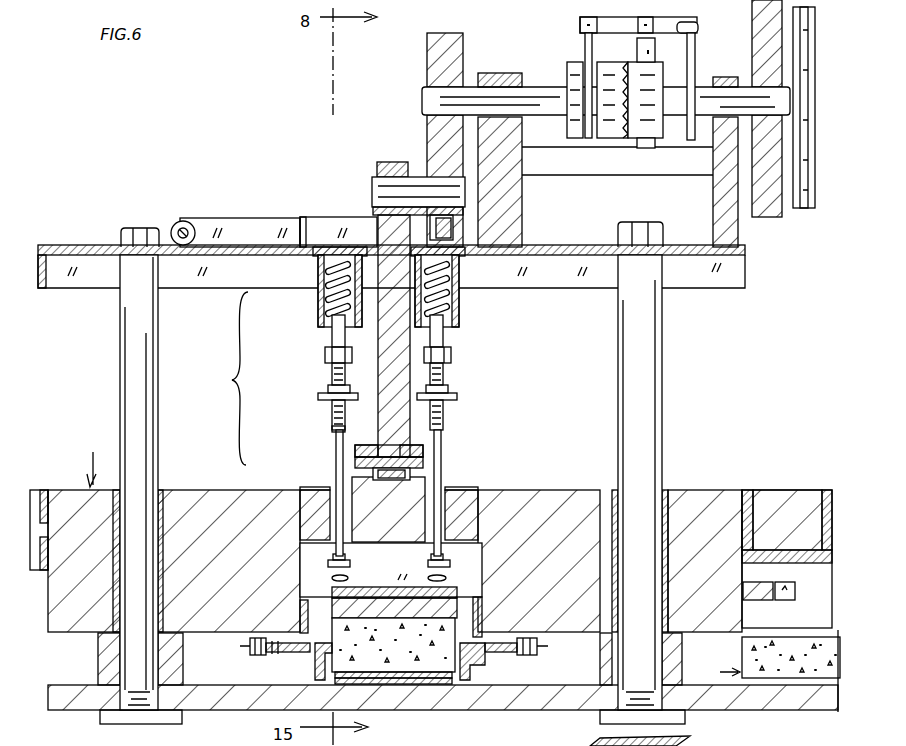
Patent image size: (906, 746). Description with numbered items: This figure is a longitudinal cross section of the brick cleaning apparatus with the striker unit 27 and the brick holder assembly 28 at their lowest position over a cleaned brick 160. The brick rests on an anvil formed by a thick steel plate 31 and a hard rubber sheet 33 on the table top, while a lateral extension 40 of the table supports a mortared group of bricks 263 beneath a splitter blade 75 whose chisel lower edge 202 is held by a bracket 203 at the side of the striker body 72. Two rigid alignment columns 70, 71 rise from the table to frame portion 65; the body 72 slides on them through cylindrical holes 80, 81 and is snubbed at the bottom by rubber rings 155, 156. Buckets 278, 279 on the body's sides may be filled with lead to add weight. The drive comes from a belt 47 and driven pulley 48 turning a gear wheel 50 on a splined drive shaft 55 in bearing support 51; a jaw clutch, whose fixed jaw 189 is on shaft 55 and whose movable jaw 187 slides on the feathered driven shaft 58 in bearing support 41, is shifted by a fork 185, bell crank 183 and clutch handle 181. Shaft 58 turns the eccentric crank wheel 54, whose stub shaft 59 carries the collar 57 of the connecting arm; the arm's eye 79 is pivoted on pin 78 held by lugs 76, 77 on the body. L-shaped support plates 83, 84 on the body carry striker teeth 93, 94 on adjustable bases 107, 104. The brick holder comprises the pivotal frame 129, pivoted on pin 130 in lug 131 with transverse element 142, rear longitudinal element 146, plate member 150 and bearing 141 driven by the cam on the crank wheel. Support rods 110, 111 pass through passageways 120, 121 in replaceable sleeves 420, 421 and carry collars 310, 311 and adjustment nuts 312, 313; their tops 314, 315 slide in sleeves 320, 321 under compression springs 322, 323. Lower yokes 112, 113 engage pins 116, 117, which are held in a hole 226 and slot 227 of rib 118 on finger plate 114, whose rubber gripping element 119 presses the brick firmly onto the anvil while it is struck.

The striker unit 27 is at (93, 459).
The brick holder assembly 28 is at (221, 378).
The steel plate 31 is at (430, 686).
The hard rubber sheet 33 is at (442, 690).
The extension of the table 40 is at (789, 716).
The bearing support 41 is at (522, 80).
The pulley belt 47 is at (808, 186).
The driven pulley 48 is at (815, 51).
The gear wheel 50 is at (775, 217).
The bearing support 51 is at (714, 81).
The crank wheel 54 is at (427, 67).
The splined drive shaft 55 is at (660, 105).
The collar 57 is at (378, 162).
The driven shaft 58 is at (422, 97).
The stub shaft 59 is at (372, 182).
The frame portion 65 is at (97, 252).
The striker alignment column 70 is at (120, 391).
The striker alignment column 71 is at (618, 423).
The striker body 72 is at (50, 605).
The splitter blade 75 is at (828, 580).
The lug 76 is at (355, 451).
The lug 77 is at (423, 451).
The pivot pin 78 is at (423, 466).
The eye 79 is at (332, 430).
The vertical cylindrical hole 80 is at (150, 490).
The vertical cylindrical hole 81 is at (603, 490).
The lateral striker teeth unit support plate 83 is at (254, 657).
The lateral striker teeth unit support plate 84 is at (530, 658).
The striker teeth 93 is at (314, 664).
The striker teeth 94 is at (475, 663).
The adjustable base 104 is at (505, 656).
The adjustable base 107 is at (275, 665).
The support rod 110 is at (340, 469).
The support rod 111 is at (443, 425).
The lower yoke 112 is at (348, 563).
The lower yoke 113 is at (432, 562).
The finger plate 114 is at (457, 592).
The pivot pin 116 is at (328, 566).
The pivot pin 117 is at (446, 566).
The supporting rib 118 is at (391, 570).
The gripping element 119 is at (484, 620).
The vertical cylindrical passageway 120 is at (306, 514).
The vertical cylindrical passageway 121 is at (458, 518).
The pivotal frame 129 is at (230, 219).
The pivot pin 130 is at (178, 224).
The lug 131 is at (170, 232).
The bearing 141 is at (455, 213).
The left hand transverse element 142 is at (300, 217).
The rear longitudinal element 146 is at (350, 222).
The plate member 150 is at (322, 250).
The snubber ring 155 is at (98, 660).
The snubber ring 156 is at (676, 650).
The brick 160 is at (392, 660).
The clutch handle 181 is at (695, 53).
The bell crank 183 is at (580, 25).
The fork 185 is at (585, 49).
The movable jaw 187 is at (620, 72).
The fixed jaw 189 is at (660, 72).
The lower edge 202 is at (828, 637).
The bracket 203 is at (783, 600).
The cylindrical hole 226 is at (332, 577).
The slot 227 is at (446, 578).
The group of bricks 263 is at (711, 671).
The bucket 278 is at (43, 490).
The bucket 279 is at (828, 490).
The collar 310 is at (318, 395).
The collar 311 is at (457, 396).
The spring tension adjustment nut 312 is at (325, 361).
The spring tension adjustment nut 313 is at (451, 359).
The top of rod 314 is at (332, 329).
The top of rod 315 is at (443, 329).
The sleeve 320 is at (318, 269).
The sleeve 321 is at (459, 272).
The helical compression spring 322 is at (325, 293).
The compression spring 323 is at (452, 293).
The replaceable sleeve 420 is at (300, 489).
The replaceable sleeve 421 is at (480, 490).